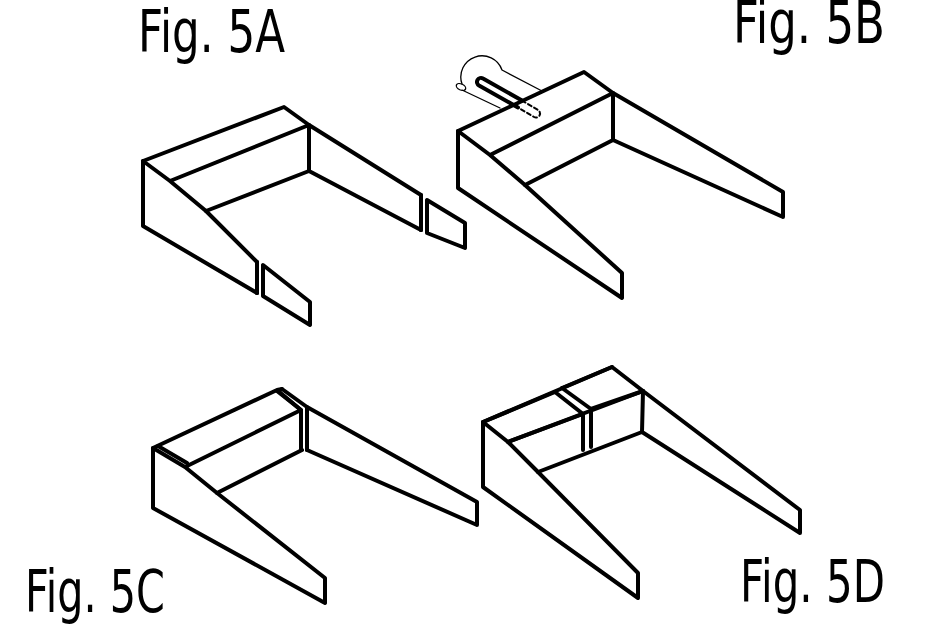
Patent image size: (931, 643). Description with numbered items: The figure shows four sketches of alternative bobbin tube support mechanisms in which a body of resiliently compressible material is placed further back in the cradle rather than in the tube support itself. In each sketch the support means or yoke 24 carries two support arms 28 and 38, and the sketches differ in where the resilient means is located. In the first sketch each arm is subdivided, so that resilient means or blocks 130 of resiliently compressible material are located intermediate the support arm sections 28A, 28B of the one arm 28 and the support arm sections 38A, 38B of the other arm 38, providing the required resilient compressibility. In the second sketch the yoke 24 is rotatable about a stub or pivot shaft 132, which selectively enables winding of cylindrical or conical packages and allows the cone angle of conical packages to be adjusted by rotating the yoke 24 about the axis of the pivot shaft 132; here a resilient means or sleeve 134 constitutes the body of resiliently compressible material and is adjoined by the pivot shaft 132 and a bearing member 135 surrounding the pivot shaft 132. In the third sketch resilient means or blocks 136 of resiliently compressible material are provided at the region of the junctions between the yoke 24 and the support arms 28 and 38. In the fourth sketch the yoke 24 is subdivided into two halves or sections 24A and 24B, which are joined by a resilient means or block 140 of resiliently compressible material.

In FIG. 5A, the support means or yoke 24 is at (217, 142).
In FIG. 5B, the support means or yoke 24 is at (572, 95).
In FIG. 5C, the support means or yoke 24 is at (220, 428).
In FIG. 5D, the support means or yoke 24 is at (548, 410).
In FIG. 5D, the yoke section 24A is at (512, 422).
In FIG. 5D, the yoke section 24B is at (600, 388).
In FIG. 5A, the support arm 28 is at (222, 260).
In FIG. 5B, the support arm 28 is at (565, 250).
In FIG. 5C, the support arm 28 is at (248, 543).
In FIG. 5D, the support arm 28 is at (583, 542).
In FIG. 5A, the support arm section 28A is at (285, 297).
In FIG. 5A, the support arm section 28B is at (198, 235).
In FIG. 5A, the support arm 38 is at (358, 168).
In FIG. 5B, the support arm 38 is at (707, 160).
In FIG. 5C, the support arm 38 is at (392, 467).
In FIG. 5D, the support arm 38 is at (720, 462).
In FIG. 5A, the support arm section 38A is at (447, 223).
In FIG. 5A, the support arm section 38B is at (387, 193).
In FIG. 5A, the resilient means or blocks 130 is at (422, 232).
In FIG. 5B, the pivot shaft 132 is at (500, 78).
In FIG. 5B, the resilient means or sleeve 134 is at (458, 85).
In FIG. 5B, the bearing member 135 is at (472, 63).
In FIG. 5C, the resilient means or blocks 136 is at (303, 453).
In FIG. 5D, the resilient means or block 140 is at (587, 453).